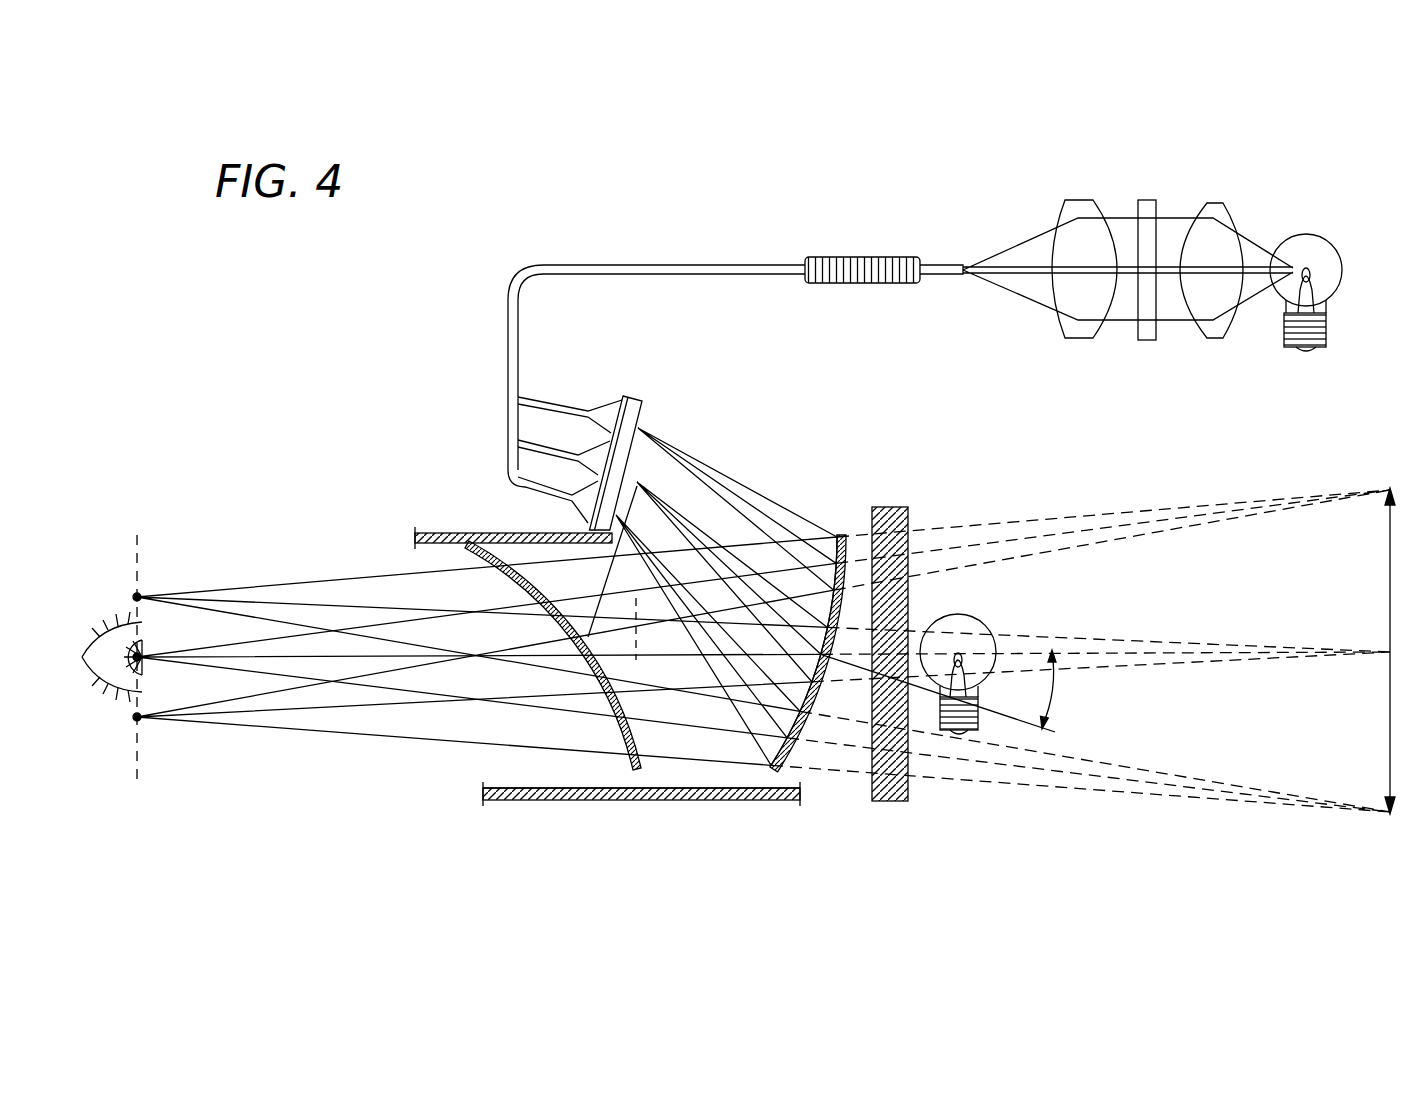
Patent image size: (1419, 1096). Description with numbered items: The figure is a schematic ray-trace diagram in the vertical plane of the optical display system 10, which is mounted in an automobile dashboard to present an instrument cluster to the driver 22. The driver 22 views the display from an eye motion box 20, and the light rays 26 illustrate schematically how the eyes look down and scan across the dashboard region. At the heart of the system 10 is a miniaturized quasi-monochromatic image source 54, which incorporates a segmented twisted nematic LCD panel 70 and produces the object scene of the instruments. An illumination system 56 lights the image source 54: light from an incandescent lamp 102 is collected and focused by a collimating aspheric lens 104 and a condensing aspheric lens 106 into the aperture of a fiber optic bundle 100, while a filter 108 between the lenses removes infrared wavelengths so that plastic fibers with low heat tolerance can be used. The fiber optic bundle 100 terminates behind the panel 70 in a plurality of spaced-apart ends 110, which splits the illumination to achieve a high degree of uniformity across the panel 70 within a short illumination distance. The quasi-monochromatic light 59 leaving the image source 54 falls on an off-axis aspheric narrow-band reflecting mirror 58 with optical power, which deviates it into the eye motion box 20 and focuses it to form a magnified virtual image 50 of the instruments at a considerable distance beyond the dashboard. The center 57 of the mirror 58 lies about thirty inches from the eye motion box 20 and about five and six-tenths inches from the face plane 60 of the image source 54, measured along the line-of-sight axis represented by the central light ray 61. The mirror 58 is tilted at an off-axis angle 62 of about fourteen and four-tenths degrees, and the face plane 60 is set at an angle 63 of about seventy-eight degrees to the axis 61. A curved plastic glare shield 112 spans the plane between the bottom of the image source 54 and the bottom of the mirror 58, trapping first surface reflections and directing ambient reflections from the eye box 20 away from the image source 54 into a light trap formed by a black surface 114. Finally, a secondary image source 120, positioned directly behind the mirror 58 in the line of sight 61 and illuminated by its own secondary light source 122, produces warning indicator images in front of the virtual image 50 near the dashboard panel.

The optical display system 10 is at (383, 428).
The eye motion box 20 is at (137, 557).
The driver 22 is at (103, 680).
The light rays 26 is at (323, 733).
The virtual image 50 is at (1385, 582).
The image source 54 is at (597, 386).
The illumination system 56 is at (1018, 320).
The center of the aspheric mirror 57 is at (836, 652).
The off-axis aspheric narrow-band reflecting mirror 58 is at (816, 710).
The quasi-monochromatic light 59 is at (733, 481).
The face plane 60 is at (594, 577).
The line-of-sight axis 61 is at (1128, 649).
The off-axis angle 62 is at (1058, 696).
The angle 63 is at (634, 645).
The LCD panel 70 is at (637, 395).
The fiber optic bundle 100 is at (862, 257).
The lamp 102 is at (1318, 235).
The collimating aspheric lens 104 is at (1220, 204).
The condensing aspheric lens 106 is at (1073, 200).
The filter 108 is at (1147, 200).
The spaced-apart ends 110 is at (567, 508).
The glare shield 112 is at (612, 768).
The black surface 114 is at (523, 800).
The secondary image source 120 is at (892, 507).
The secondary light source 122 is at (970, 619).